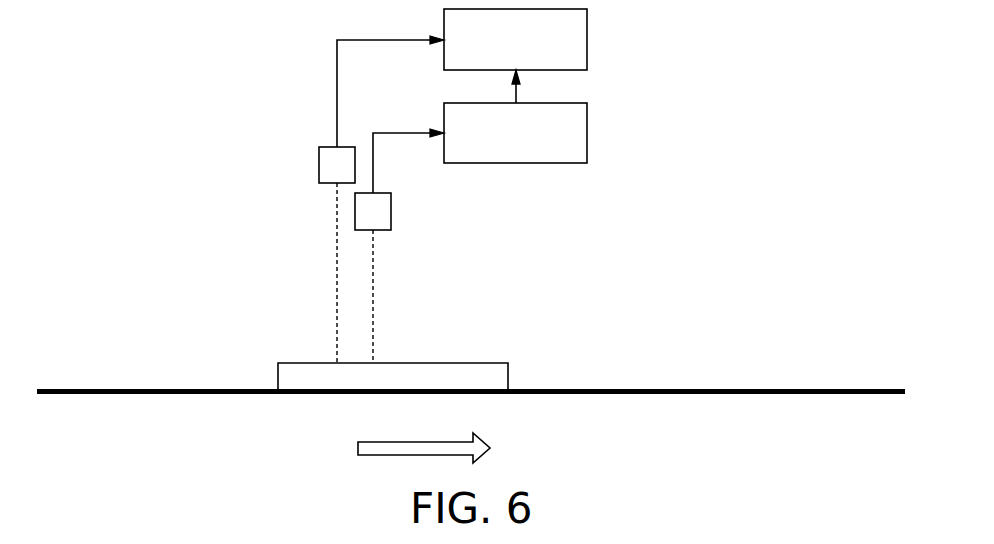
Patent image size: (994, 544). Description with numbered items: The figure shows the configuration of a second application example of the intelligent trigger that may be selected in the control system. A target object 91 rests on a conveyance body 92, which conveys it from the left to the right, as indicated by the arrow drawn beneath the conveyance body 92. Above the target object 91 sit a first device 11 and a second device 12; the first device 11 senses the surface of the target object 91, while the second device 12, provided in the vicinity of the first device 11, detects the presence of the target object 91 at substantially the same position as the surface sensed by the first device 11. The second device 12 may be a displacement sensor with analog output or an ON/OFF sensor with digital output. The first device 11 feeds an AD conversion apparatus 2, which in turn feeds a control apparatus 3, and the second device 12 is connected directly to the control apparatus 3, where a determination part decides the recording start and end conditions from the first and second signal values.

The AD conversion apparatus 2 is at (587, 132).
The control apparatus 3 is at (587, 40).
The first device 11 is at (391, 213).
The second device 12 is at (319, 163).
The target object 91 is at (452, 363).
The conveyance body 92 is at (703, 389).